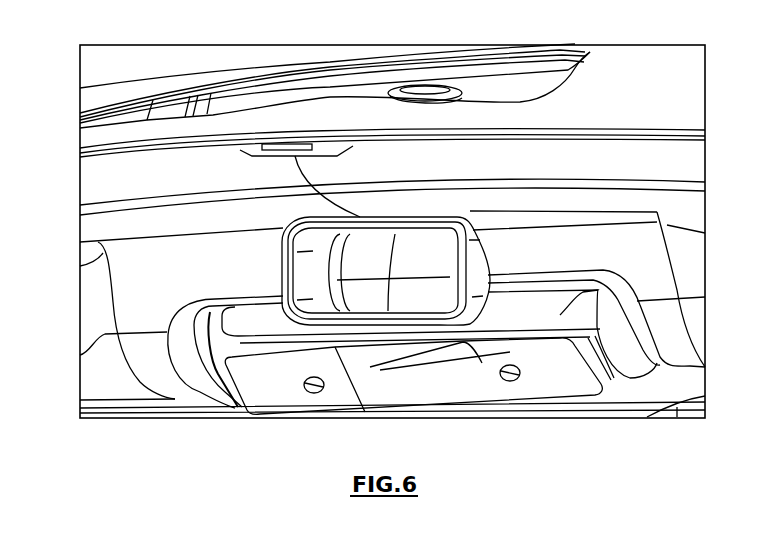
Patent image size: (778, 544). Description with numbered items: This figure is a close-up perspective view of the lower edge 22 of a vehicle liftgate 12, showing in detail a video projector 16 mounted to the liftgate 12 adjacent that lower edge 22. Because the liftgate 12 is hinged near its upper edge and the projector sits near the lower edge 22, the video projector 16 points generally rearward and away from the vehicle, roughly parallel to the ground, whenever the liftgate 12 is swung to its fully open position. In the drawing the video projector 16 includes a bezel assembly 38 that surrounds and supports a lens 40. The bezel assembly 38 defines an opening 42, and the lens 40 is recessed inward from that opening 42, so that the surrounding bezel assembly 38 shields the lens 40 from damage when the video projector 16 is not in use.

The liftgate 12 is at (92, 102).
The video projector 16 is at (268, 277).
The lower edge 22 is at (228, 262).
The bezel assembly 38 is at (463, 222).
The lens 40 is at (420, 247).
The opening 42 is at (450, 258).